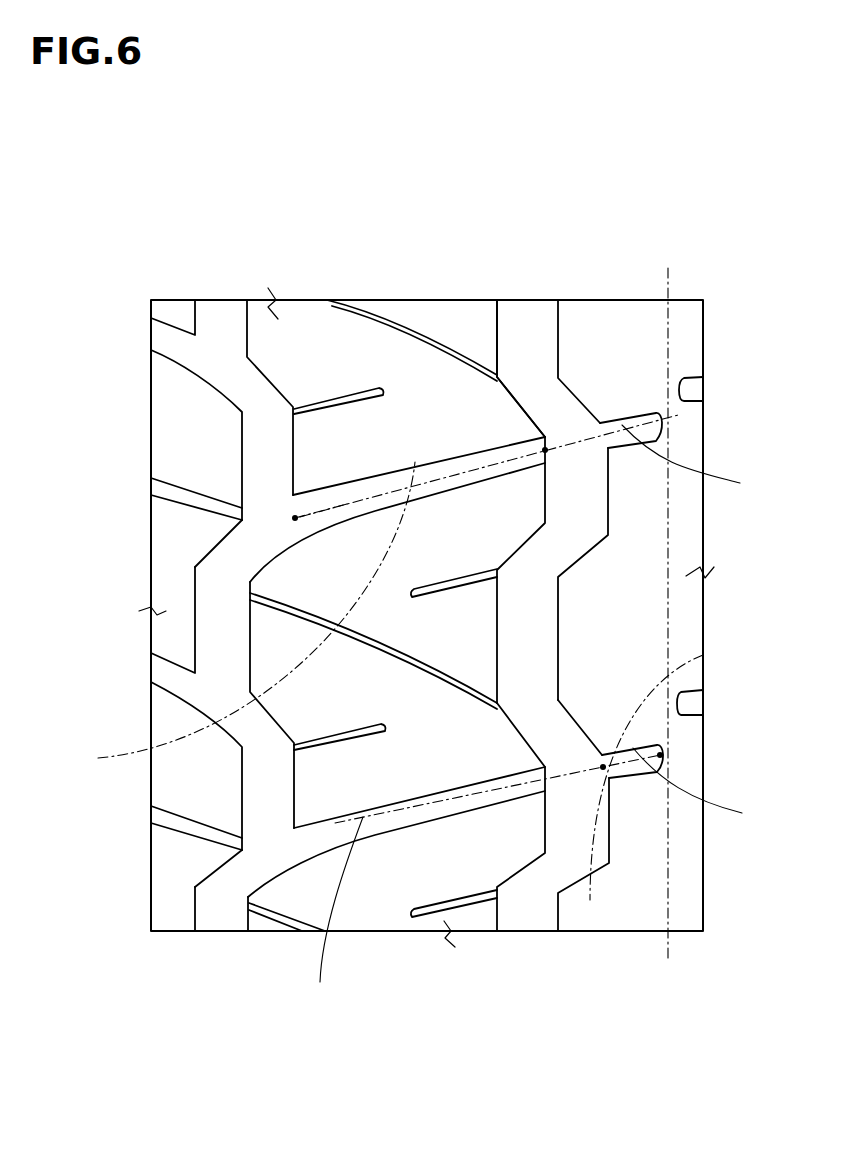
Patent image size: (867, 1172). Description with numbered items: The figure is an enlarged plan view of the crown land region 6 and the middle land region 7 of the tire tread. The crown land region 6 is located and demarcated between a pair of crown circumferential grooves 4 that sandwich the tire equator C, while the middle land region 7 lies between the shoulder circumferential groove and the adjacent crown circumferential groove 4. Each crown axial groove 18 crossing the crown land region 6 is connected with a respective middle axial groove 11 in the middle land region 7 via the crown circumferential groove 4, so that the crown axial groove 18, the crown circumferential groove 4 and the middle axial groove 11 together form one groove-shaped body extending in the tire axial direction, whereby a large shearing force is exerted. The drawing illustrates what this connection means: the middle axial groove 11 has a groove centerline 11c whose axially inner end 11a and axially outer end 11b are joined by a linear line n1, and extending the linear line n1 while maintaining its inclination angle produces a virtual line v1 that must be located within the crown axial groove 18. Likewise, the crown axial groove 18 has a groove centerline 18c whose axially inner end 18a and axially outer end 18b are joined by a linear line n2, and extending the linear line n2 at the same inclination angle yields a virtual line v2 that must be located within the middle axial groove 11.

The middle land region 7 is at (323, 332).
The middle axial groove 11 is at (417, 453).
The axially inner end of groove centerline of middle axial groove 11a is at (545, 447).
The axially outer end of groove centerline of middle axial groove 11b is at (295, 518).
The groove centerline of middle axial groove 11c is at (347, 502).
The crown land region 6 is at (593, 347).
The crown circumferential groove 4 is at (530, 903).
The crown axial groove 18 is at (627, 407).
The axially inner end of groove centerline of crown axial groove 18a is at (660, 755).
The axially outer end of groove centerline of crown axial groove 18b is at (590, 900).
The groove centerline of crown axial groove 18c is at (703, 655).
The tire equator C is at (668, 600).
The linear line n1 is at (241, 619).
The linear line n2 is at (704, 787).
The virtual line v1 is at (697, 459).
The virtual line v2 is at (334, 914).